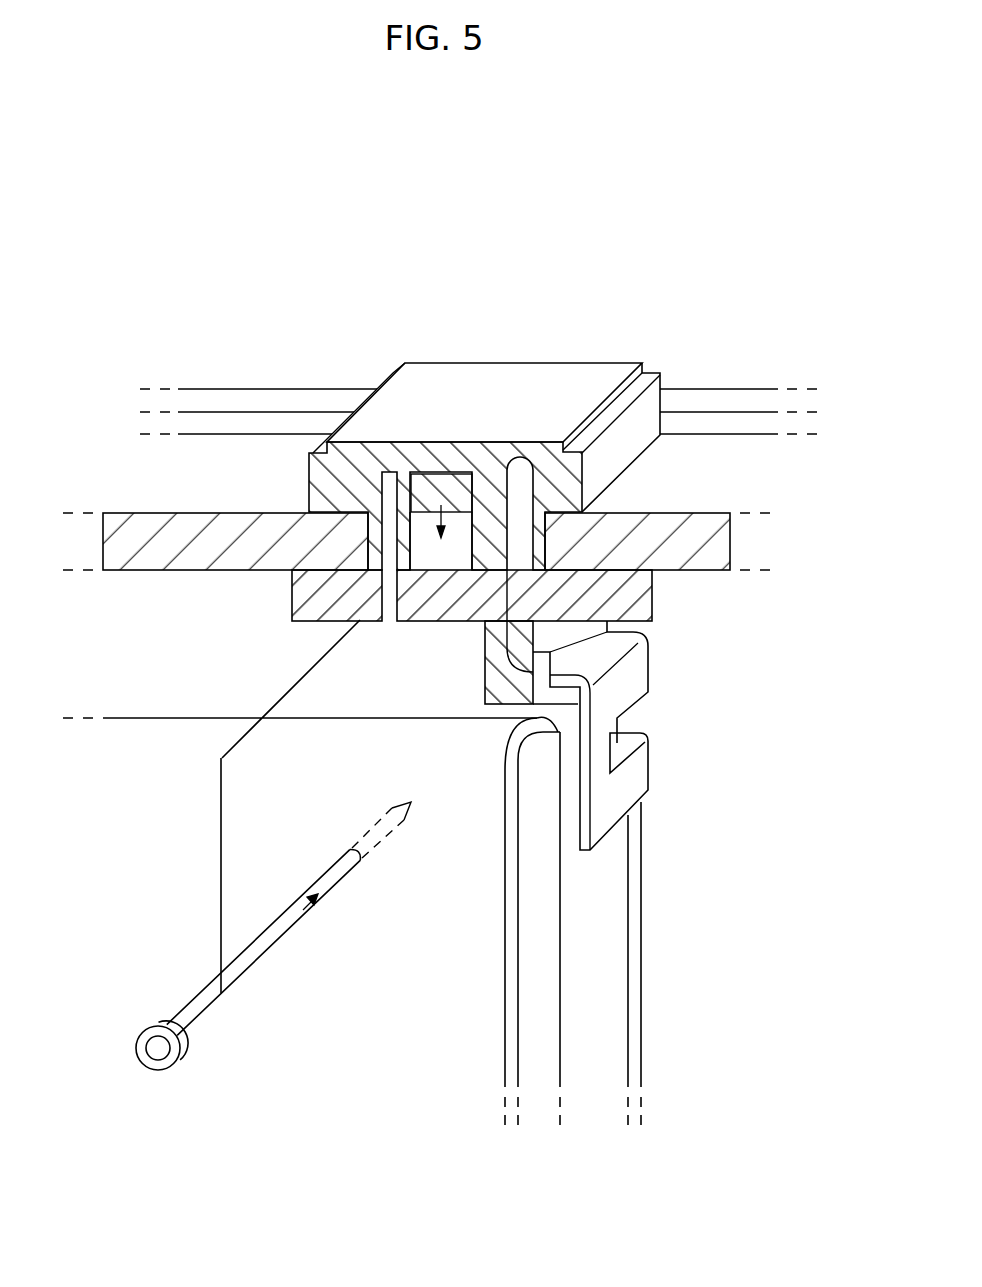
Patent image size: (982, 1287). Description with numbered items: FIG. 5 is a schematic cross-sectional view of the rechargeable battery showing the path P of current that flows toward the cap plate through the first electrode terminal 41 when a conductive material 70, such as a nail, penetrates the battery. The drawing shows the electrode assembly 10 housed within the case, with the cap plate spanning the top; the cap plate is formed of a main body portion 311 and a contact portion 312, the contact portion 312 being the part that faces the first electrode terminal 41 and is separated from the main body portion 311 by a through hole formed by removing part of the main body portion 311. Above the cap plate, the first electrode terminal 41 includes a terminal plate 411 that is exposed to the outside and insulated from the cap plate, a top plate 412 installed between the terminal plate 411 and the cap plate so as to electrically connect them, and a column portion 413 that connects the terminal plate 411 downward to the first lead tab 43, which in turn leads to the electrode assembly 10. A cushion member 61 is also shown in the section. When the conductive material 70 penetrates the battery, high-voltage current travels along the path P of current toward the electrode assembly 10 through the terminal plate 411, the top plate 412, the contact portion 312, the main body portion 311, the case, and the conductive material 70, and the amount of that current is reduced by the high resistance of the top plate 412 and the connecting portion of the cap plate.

The electrode assembly 10 is at (467, 932).
The main body portion 311 is at (683, 463).
The contact portion 312 is at (420, 543).
The first electrode terminal 41 is at (384, 359).
The terminal plate 411 is at (508, 373).
The top plate 412 is at (424, 490).
The column portion 413 is at (525, 595).
The first lead tab 43 is at (640, 672).
The cushion member 61 is at (648, 378).
The conductive material 70 is at (197, 1008).
The path of current P is at (220, 802).